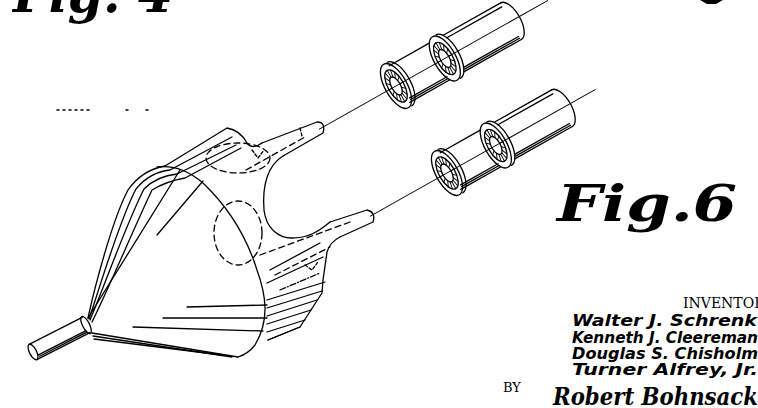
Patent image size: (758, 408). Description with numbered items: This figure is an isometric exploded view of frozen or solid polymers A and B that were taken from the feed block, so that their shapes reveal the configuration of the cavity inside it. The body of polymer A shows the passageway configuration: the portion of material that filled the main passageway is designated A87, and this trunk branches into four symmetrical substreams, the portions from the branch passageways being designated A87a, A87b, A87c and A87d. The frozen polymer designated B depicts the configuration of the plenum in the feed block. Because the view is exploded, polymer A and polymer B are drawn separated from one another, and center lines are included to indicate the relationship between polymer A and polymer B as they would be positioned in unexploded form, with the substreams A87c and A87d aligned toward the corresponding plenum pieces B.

The frozen polymer A is at (236, 215).
The material portion from passageway 87 A87 is at (53, 302).
The material portion from passageway 87a A87a is at (253, 120).
The material portion from passageway 87b A87b is at (345, 288).
The material portion from passageway 87c A87c is at (360, 246).
The material portion from passageway 87d A87d is at (314, 157).
The frozen polymer B is at (466, 119).